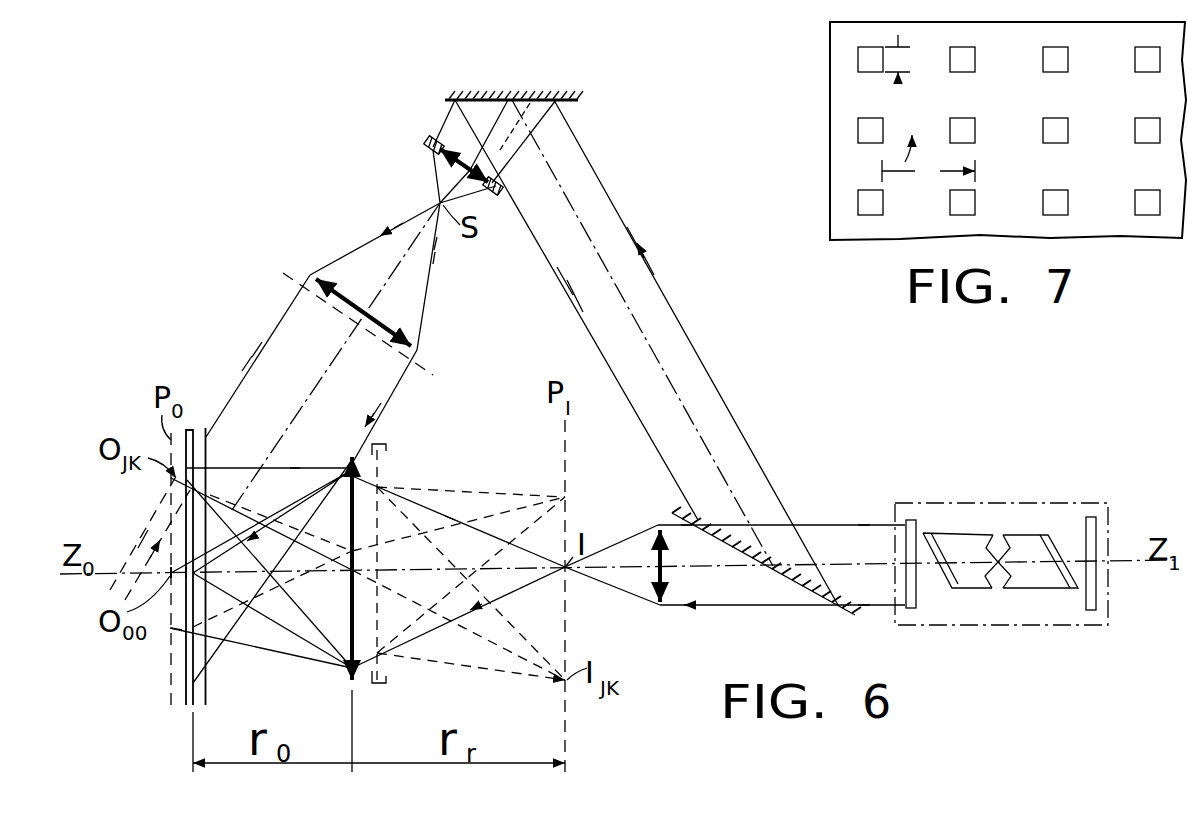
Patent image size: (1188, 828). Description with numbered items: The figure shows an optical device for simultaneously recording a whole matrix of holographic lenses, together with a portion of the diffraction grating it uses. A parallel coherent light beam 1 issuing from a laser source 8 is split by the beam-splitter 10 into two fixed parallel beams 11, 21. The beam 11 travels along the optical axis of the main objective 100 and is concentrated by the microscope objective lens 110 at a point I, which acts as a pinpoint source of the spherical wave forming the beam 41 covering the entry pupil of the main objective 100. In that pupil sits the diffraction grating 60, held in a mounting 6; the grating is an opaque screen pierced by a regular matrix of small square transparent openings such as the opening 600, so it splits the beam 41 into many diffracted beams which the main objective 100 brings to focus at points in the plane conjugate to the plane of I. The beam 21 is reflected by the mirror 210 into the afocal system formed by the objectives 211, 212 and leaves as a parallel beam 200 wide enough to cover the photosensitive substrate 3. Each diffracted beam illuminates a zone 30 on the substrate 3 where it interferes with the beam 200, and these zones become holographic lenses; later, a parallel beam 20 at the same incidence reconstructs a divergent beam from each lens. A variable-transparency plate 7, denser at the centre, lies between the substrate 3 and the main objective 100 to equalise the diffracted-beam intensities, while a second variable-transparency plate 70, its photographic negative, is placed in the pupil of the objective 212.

In FIG. 6, the parallel coherent light beam 1 is at (822, 550).
In FIG. 6, the photosensitive substrate 3 is at (192, 428).
In FIG. 6, the mounting 6 is at (385, 450).
In FIG. 6, the variable-transparency plate 7 is at (208, 437).
In FIG. 6, the laser source 8 is at (978, 617).
In FIG. 6, the beam-splitter 10 is at (822, 607).
In FIG. 6, the beam 11 is at (715, 578).
In FIG. 6, the beam of parallel light 20 is at (157, 522).
In FIG. 6, the beam 21 is at (677, 350).
In FIG. 6, the zone 30 is at (207, 484).
In FIG. 6, the beam 41 is at (507, 577).
In FIG. 6, the diffraction grating 60 is at (383, 522).
In FIG. 6, the second variable-transparency plate 70 is at (378, 343).
In FIG. 6, the main objective 100 is at (348, 670).
In FIG. 6, the microscope objective lens 110 is at (668, 575).
In FIG. 6, the parallel beam 200 is at (295, 318).
In FIG. 6, the mirror 210 is at (558, 98).
In FIG. 6, the objective 211 is at (478, 170).
In FIG. 6, the objective 212 is at (362, 313).
In FIG. 7, the transparent opening 600 is at (858, 128).